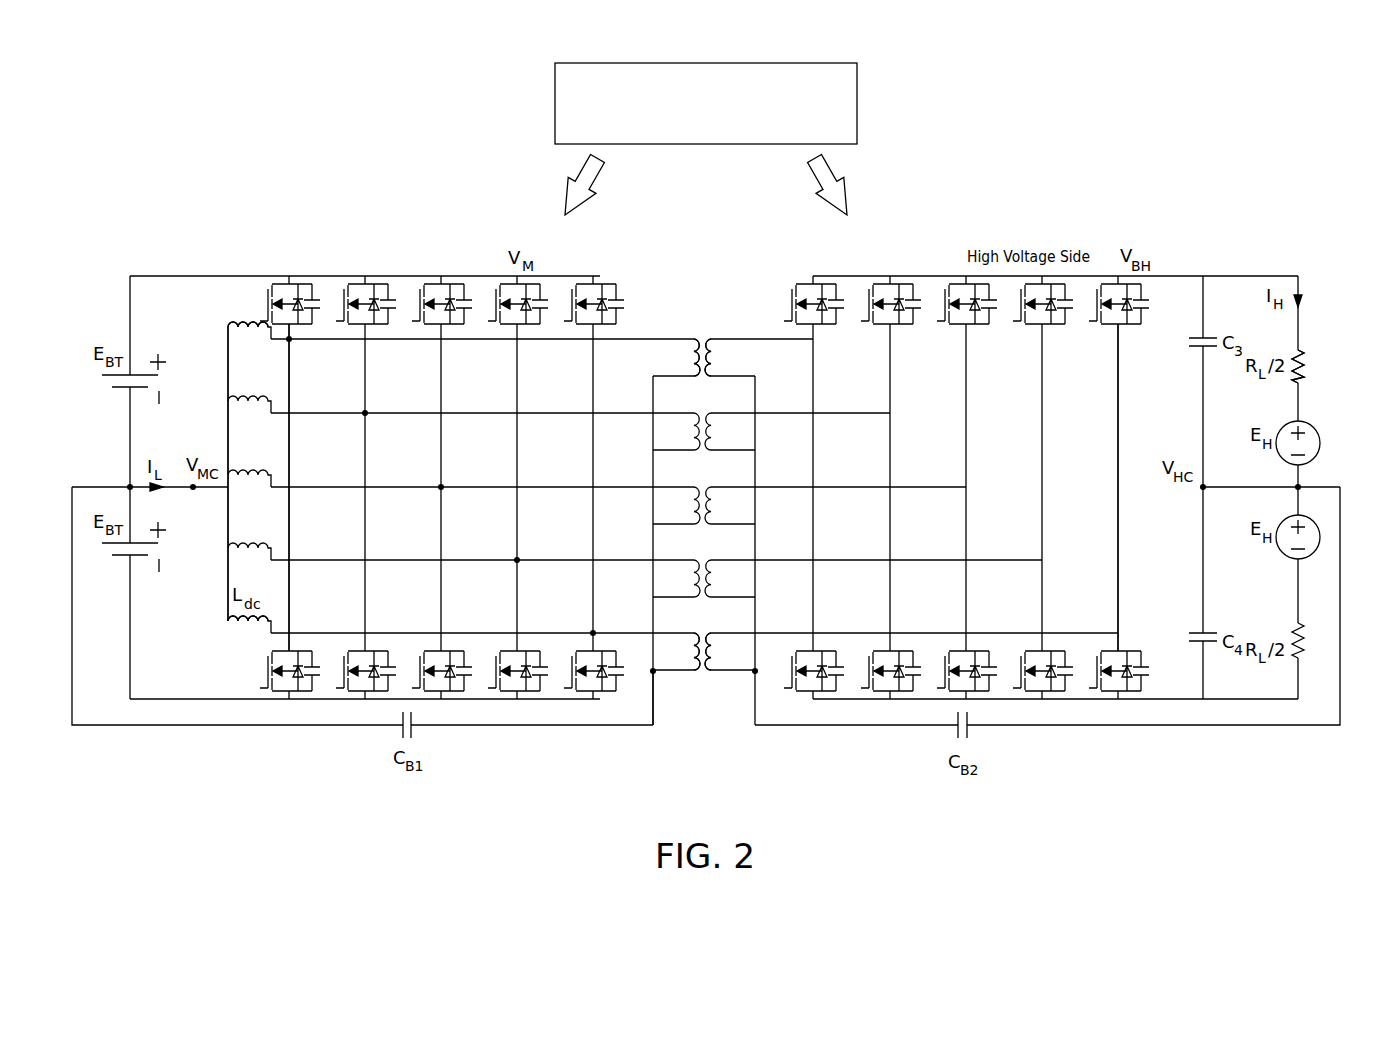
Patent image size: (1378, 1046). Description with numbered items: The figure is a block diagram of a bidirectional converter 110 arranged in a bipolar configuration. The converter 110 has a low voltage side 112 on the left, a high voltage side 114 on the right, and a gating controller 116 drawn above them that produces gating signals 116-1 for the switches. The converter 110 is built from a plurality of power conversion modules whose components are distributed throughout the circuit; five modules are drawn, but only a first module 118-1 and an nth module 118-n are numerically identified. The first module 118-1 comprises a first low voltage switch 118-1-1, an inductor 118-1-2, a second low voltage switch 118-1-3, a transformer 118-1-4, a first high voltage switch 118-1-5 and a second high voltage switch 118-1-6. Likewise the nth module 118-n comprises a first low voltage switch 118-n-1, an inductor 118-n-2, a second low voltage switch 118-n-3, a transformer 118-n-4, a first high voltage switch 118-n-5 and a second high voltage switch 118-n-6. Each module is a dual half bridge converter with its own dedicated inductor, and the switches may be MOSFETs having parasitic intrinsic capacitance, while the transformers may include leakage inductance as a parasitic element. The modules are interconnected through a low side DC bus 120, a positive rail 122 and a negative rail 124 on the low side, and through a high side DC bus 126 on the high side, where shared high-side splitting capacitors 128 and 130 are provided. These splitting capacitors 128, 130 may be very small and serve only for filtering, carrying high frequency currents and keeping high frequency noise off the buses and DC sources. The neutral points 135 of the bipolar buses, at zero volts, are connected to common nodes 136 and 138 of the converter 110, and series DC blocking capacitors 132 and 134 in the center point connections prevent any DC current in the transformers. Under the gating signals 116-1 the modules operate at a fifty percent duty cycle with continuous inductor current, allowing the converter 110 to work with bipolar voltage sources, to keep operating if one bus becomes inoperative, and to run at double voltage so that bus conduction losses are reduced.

The bidirectional converter 110 is at (655, 730).
The low voltage side 112 is at (527, 726).
The high voltage side 114 is at (1015, 726).
The gating controller 116 is at (858, 107).
The gating signals 116-1 is at (578, 180).
The first module 118-1 is at (310, 703).
The nth module 118-n is at (1117, 705).
The first low voltage switch 118-1-1 is at (305, 286).
The inductor 118-1-2 is at (232, 326).
The second low voltage switch 118-1-3 is at (302, 694).
The transformer 118-1-4 is at (703, 339).
The first high voltage switch 118-1-5 is at (827, 292).
The second high voltage switch 118-1-6 is at (822, 700).
The first low voltage switch 118-n-1 is at (605, 286).
The inductor 118-n-2 is at (250, 652).
The second low voltage switch 118-n-3 is at (598, 700).
The transformer 118-n-4 is at (702, 637).
The first high voltage switch 118-n-5 is at (1145, 292).
The second high voltage switch 118-n-6 is at (1135, 700).
The low side DC bus 120 is at (228, 442).
The positive rail 122 is at (400, 276).
The negative rail 124 is at (466, 700).
The high side DC bus 126 is at (1300, 390).
The high-side splitting capacitor 128 is at (1208, 336).
The high-side splitting capacitor 130 is at (1208, 631).
The series DC blocking capacitor 132 is at (416, 736).
The series DC blocking capacitor 134 is at (957, 737).
The neutral points 135 is at (130, 486).
The common node 136 is at (651, 674).
The common node 138 is at (757, 674).